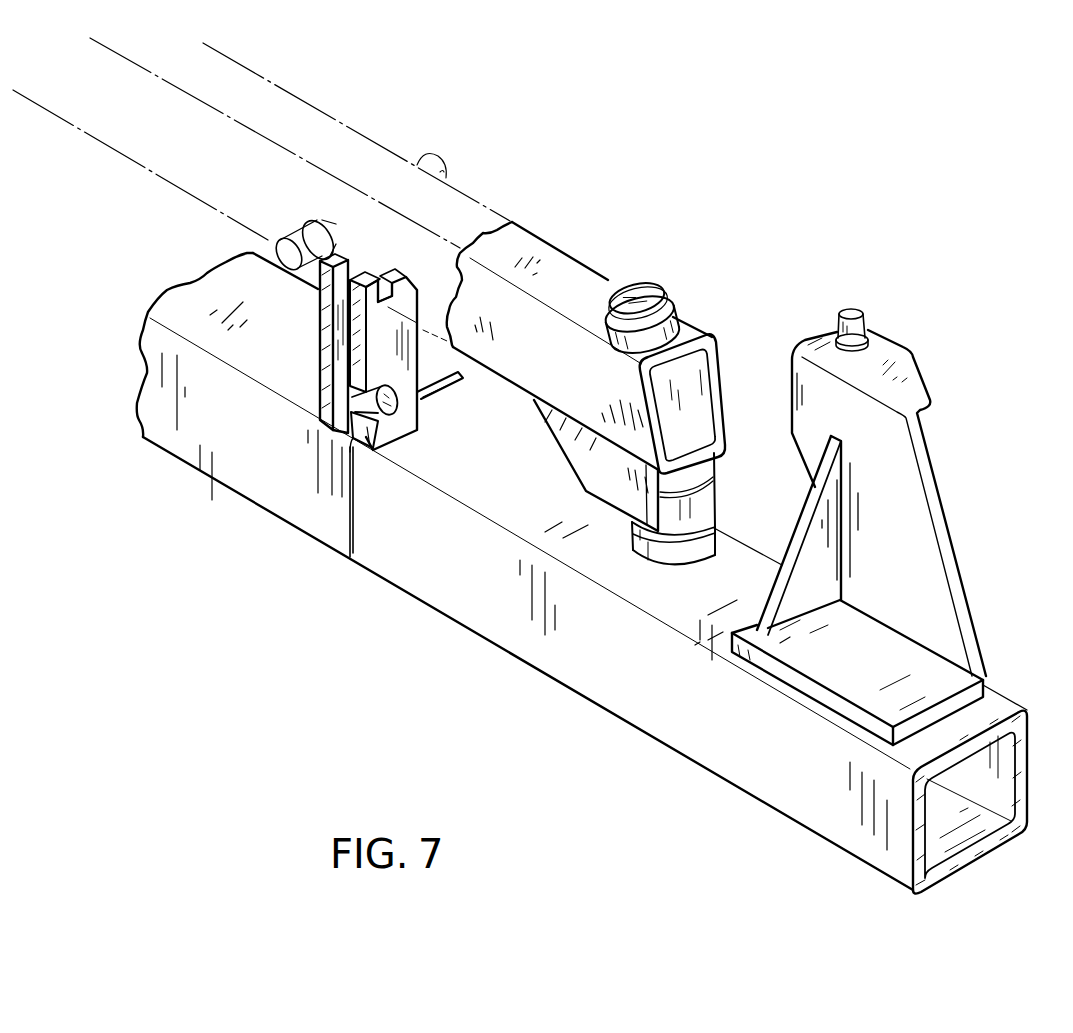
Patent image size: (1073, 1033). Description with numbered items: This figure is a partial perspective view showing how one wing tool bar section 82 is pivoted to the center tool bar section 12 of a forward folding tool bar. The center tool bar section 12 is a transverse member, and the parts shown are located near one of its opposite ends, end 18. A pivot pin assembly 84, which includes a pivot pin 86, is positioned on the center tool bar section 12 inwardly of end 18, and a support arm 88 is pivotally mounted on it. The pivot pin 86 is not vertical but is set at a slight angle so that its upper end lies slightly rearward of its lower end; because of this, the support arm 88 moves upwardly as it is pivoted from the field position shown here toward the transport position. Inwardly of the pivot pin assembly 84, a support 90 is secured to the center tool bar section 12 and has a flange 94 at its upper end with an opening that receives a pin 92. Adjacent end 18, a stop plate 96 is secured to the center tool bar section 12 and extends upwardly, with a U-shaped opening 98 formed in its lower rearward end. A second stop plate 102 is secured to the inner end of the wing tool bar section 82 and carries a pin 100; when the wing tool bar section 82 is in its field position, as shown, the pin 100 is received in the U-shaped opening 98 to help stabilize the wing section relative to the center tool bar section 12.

The center tool bar section 12 is at (585, 690).
The end 18 is at (345, 522).
The wing tool bar section 82 is at (230, 450).
The pivot pin assembly 84 is at (722, 502).
The pivot pin 86 is at (650, 288).
The support arm 88 is at (565, 283).
The support 90 is at (907, 572).
The pin 92 is at (866, 315).
The flange 94 is at (913, 398).
The stop plate 96 is at (400, 420).
The U-shaped opening 98 is at (357, 432).
The pin 100 is at (398, 398).
The stop plate 102 is at (328, 328).